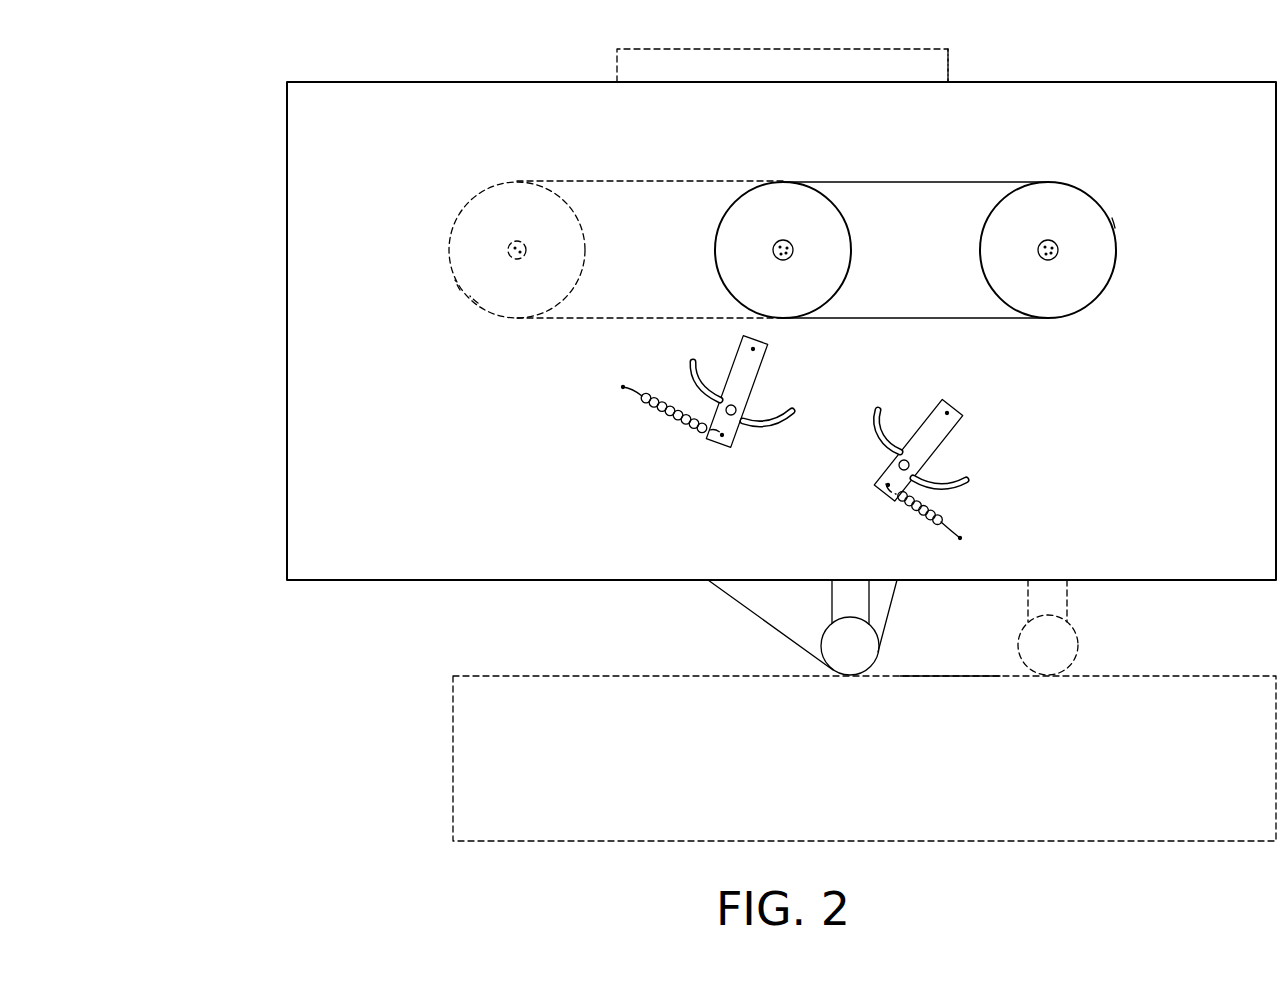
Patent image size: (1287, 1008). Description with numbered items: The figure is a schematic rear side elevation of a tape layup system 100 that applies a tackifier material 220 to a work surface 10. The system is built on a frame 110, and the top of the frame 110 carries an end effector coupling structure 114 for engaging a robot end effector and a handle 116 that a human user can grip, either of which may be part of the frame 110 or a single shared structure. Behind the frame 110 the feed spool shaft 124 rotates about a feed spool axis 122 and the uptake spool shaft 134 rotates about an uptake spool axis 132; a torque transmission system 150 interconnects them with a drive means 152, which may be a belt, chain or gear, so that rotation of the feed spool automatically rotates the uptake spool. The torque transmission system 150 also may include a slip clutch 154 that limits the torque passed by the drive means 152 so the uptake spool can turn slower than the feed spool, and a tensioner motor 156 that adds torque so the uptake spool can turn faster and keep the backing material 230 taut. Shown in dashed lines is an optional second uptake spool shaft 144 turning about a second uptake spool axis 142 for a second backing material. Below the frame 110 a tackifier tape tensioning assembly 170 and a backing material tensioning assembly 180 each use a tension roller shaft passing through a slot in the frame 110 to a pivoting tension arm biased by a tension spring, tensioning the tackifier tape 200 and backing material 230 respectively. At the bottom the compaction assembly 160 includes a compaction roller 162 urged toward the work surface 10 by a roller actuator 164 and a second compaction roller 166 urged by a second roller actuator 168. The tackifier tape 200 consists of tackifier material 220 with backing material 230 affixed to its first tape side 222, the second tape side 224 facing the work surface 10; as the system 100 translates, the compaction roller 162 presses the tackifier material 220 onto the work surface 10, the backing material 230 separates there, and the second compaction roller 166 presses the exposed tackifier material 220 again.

The work surface 10 is at (485, 676).
The tape layup system 100 is at (172, 90).
The frame 110 is at (317, 77).
The end effector coupling structure 114 is at (650, 47).
The handle 116 is at (915, 47).
The feed spool axis 122 is at (777, 260).
The feed spool shaft 124 is at (790, 258).
The uptake spool axis 132 is at (1042, 243).
The uptake spool shaft 134 is at (1050, 262).
The second uptake spool axis 142 is at (525, 242).
The second uptake spool shaft 144 is at (505, 250).
The torque transmission system 150 is at (773, 232).
The drive means 152 is at (607, 181).
The slip clutch 154 is at (458, 290).
The tensioner motor 156 is at (478, 303).
The compaction assembly 160 is at (942, 605).
The compaction roller 162 is at (820, 640).
The roller actuator 164 is at (830, 600).
The second compaction roller 166 is at (1080, 653).
The second roller actuator 168 is at (1072, 597).
The tackifier tape tensioning assembly 170 is at (694, 417).
The backing material tensioning assembly 180 is at (937, 459).
The tackifier tape 200 is at (727, 612).
The tackifier material 220 is at (771, 631).
The first tape side 222 is at (932, 676).
The second tape side 224 is at (958, 680).
The backing material 230 is at (893, 602).